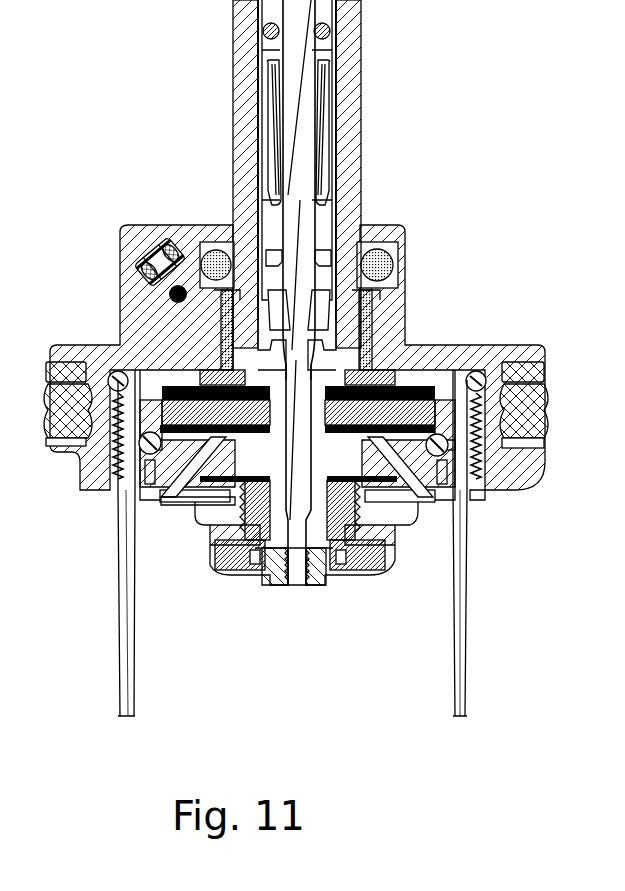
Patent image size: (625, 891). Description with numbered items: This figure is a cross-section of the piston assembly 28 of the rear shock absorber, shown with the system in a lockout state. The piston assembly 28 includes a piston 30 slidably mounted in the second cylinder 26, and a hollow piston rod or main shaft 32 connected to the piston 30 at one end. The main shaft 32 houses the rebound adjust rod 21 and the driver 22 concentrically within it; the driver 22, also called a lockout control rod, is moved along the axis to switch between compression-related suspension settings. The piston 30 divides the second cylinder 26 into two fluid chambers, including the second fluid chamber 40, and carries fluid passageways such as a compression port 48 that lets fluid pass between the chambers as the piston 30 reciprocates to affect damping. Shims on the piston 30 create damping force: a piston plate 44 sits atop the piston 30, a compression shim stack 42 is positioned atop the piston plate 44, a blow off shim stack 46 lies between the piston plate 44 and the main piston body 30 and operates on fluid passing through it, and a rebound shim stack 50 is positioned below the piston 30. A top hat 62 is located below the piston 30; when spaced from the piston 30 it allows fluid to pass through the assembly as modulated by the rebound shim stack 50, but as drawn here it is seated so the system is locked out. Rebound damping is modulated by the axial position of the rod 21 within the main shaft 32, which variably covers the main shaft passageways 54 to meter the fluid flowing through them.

The rebound adjust rod 21 is at (330, 200).
The driver 22 is at (335, 162).
The second cylinder 26 is at (465, 697).
The piston assembly 28 is at (482, 512).
The piston 30 is at (115, 490).
The main shaft 32 is at (360, 52).
The second fluid chamber 40 is at (330, 740).
The compression shim stack 42 is at (397, 393).
The piston plate 44 is at (152, 392).
The blow off shim stack 46 is at (400, 437).
The compression port 48 is at (160, 507).
The rebound shim stack 50 is at (218, 502).
The main shaft passageways 54 is at (342, 307).
The top hat 62 is at (393, 560).